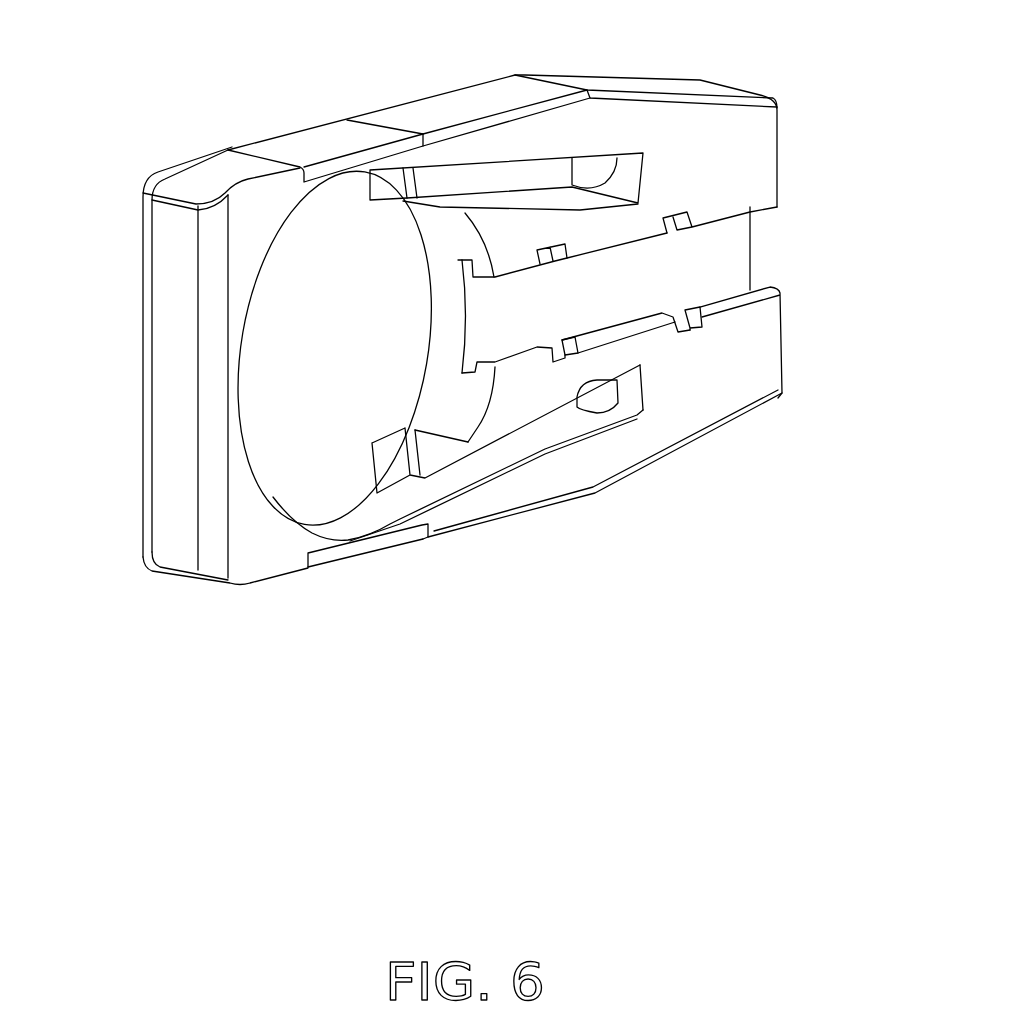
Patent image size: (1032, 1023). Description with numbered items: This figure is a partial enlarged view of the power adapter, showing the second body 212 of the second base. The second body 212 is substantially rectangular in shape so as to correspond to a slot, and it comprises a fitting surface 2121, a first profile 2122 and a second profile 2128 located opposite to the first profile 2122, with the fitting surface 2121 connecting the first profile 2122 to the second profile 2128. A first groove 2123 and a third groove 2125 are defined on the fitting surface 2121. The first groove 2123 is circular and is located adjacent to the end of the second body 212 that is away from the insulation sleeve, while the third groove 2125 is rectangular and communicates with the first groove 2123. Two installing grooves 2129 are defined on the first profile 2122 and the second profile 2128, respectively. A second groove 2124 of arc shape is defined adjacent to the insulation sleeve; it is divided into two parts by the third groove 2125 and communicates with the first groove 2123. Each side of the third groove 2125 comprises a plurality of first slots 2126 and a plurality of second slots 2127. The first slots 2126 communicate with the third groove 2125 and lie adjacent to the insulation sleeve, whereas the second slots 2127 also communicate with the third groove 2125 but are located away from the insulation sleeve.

The second body 212 is at (567, 125).
The fitting surface 2121 is at (733, 387).
The first profile 2122 is at (210, 162).
The first groove 2123 is at (312, 265).
The second groove 2124 is at (557, 432).
The third groove 2125 is at (715, 255).
The first slots 2126 is at (674, 217).
The second slots 2127 is at (540, 248).
The second profile 2128 is at (520, 517).
The installing grooves 2129 is at (343, 123).